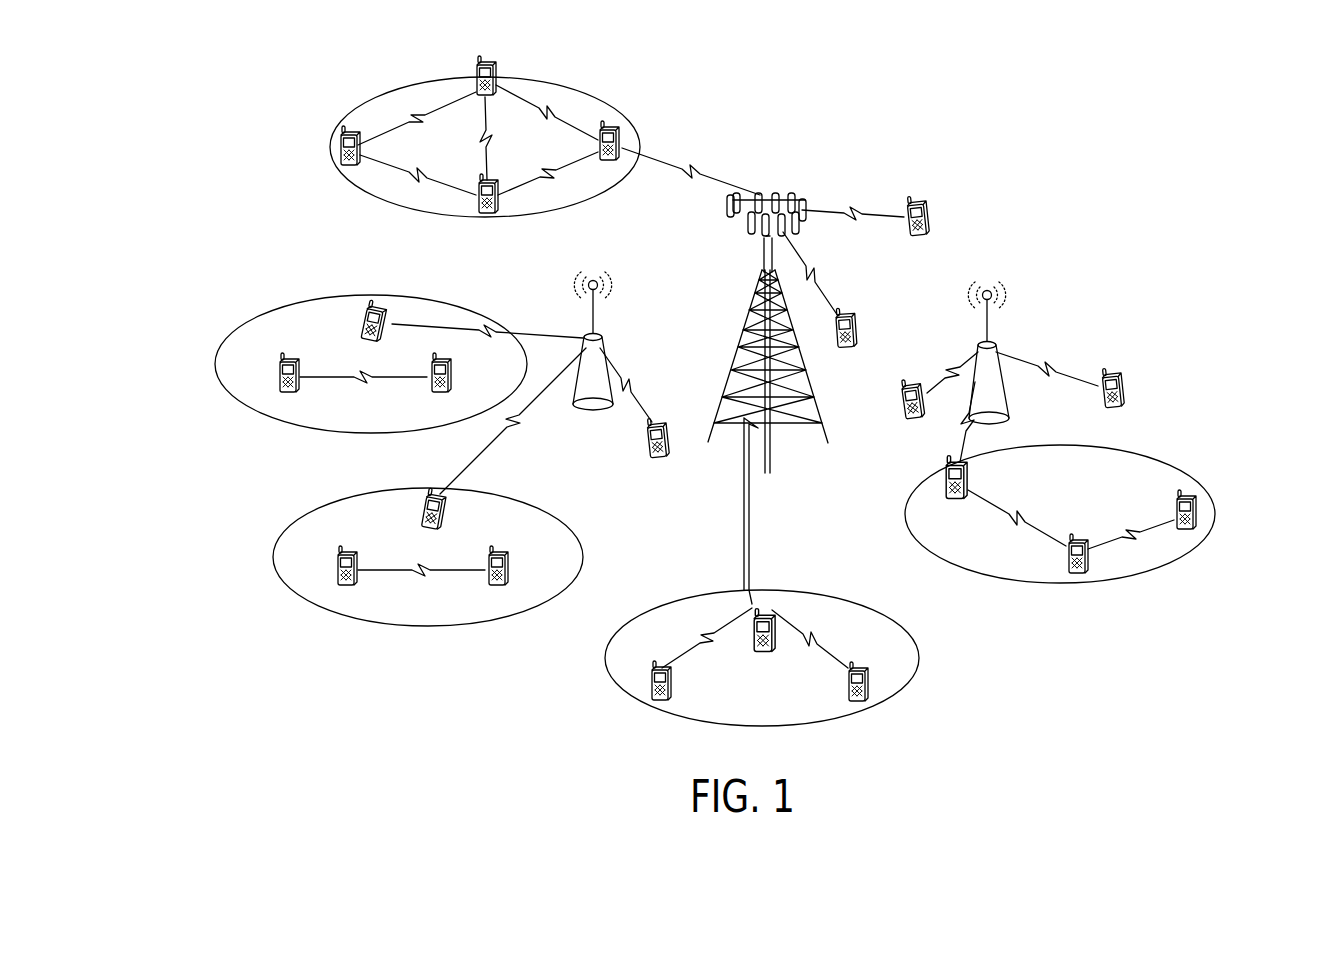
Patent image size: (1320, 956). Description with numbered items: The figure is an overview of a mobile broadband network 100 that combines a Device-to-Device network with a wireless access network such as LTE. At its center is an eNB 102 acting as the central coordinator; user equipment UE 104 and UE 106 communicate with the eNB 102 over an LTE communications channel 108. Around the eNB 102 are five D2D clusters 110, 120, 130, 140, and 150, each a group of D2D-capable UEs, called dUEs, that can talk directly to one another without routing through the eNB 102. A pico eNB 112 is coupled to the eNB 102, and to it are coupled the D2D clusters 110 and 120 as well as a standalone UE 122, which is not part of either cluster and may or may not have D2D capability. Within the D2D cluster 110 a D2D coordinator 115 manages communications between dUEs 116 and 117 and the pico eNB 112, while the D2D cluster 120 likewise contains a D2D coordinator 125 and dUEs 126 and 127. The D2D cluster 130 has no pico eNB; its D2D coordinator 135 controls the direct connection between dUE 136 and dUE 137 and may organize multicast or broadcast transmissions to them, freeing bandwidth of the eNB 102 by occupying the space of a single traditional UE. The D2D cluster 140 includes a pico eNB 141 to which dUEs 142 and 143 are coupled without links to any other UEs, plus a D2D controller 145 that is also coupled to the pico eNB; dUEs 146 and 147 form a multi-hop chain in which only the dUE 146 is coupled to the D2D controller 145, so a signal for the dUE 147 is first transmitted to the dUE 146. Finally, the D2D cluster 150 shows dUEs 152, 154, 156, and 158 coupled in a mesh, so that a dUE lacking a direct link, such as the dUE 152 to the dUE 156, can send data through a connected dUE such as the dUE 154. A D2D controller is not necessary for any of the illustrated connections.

The mobile broadband network 100 is at (955, 97).
The eNB 102 is at (800, 195).
The user equipment 104 is at (926, 206).
The user equipment 106 is at (854, 317).
The LTE communications channel 108 is at (858, 206).
The D2D cluster 110 is at (215, 364).
The pico eNB 112 is at (606, 283).
The D2D coordinator 115 is at (382, 300).
The dUE 116 is at (292, 356).
The dUE 117 is at (452, 384).
The D2D cluster 120 is at (282, 586).
The UE 122 is at (668, 462).
The D2D coordinator 125 is at (418, 516).
The dUE 126 is at (358, 586).
The dUE 127 is at (510, 570).
The D2D cluster 130 is at (852, 712).
The D2D coordinator 135 is at (748, 650).
The dUE 136 is at (672, 697).
The dUE 137 is at (870, 683).
The D2D cluster 140 is at (1196, 548).
The pico eNB 141 is at (1005, 290).
The dUE 142 is at (899, 420).
The dUE 143 is at (1126, 392).
The D2D controller 145 is at (972, 478).
The dUE 146 is at (1078, 581).
The dUE 147 is at (1198, 512).
The D2D cluster 150 is at (360, 107).
The dUE 152 is at (620, 130).
The dUE 154 is at (496, 64).
The dUE 156 is at (336, 152).
The dUE 158 is at (500, 212).